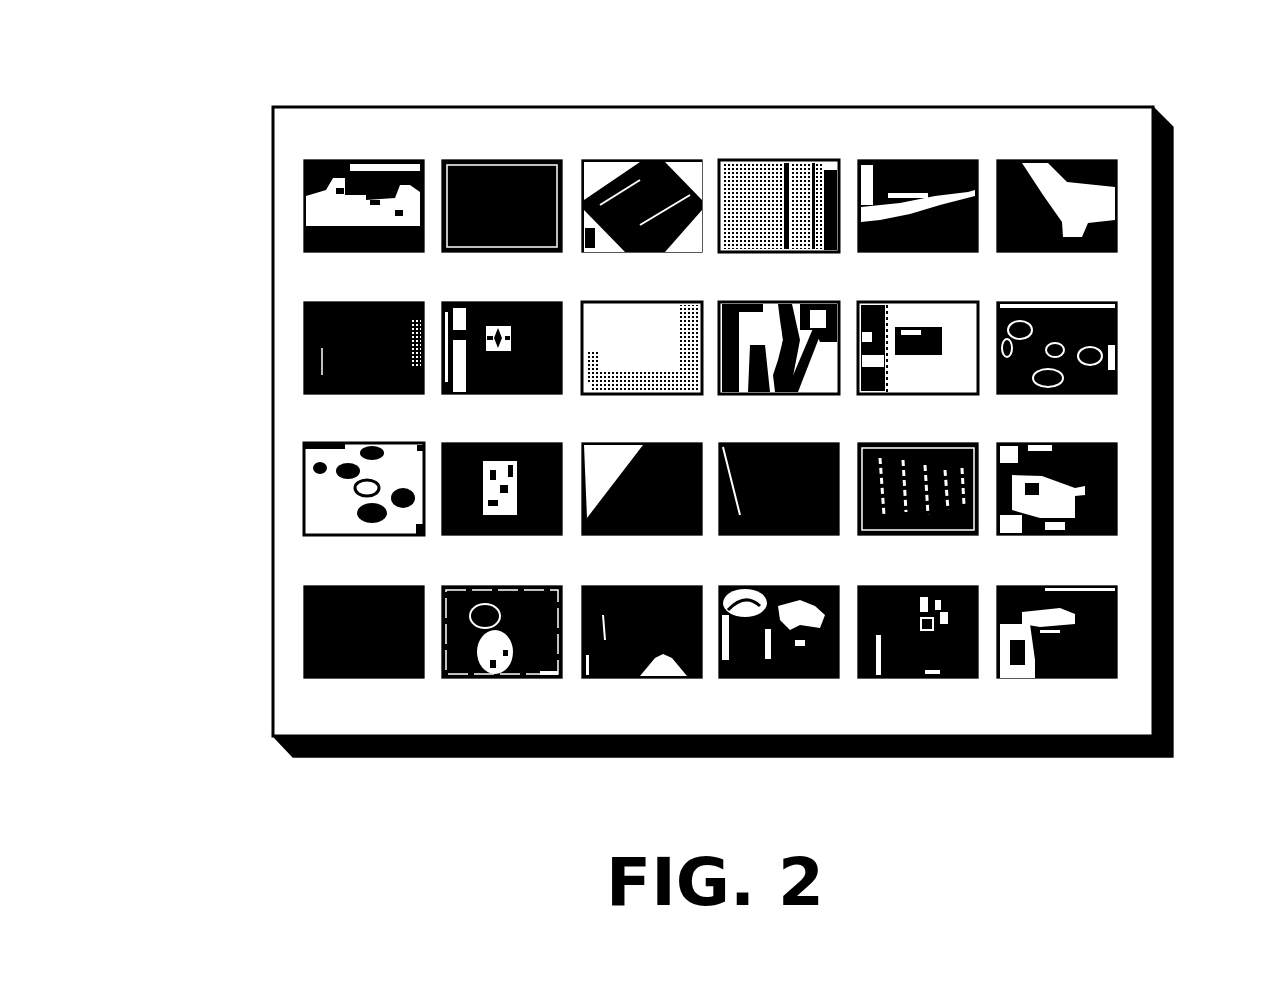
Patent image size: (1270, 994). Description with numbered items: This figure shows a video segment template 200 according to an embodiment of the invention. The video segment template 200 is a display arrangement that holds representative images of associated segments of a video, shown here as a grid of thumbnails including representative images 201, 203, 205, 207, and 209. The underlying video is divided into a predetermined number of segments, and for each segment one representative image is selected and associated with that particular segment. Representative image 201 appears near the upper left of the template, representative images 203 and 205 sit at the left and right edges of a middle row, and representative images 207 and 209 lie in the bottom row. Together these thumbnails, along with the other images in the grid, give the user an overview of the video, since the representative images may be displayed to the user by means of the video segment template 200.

The video segment template 200 is at (989, 61).
The representative image 201 is at (378, 162).
The representative image 203 is at (302, 490).
The representative image 205 is at (1118, 486).
The representative image 207 is at (498, 678).
The representative image 209 is at (783, 678).